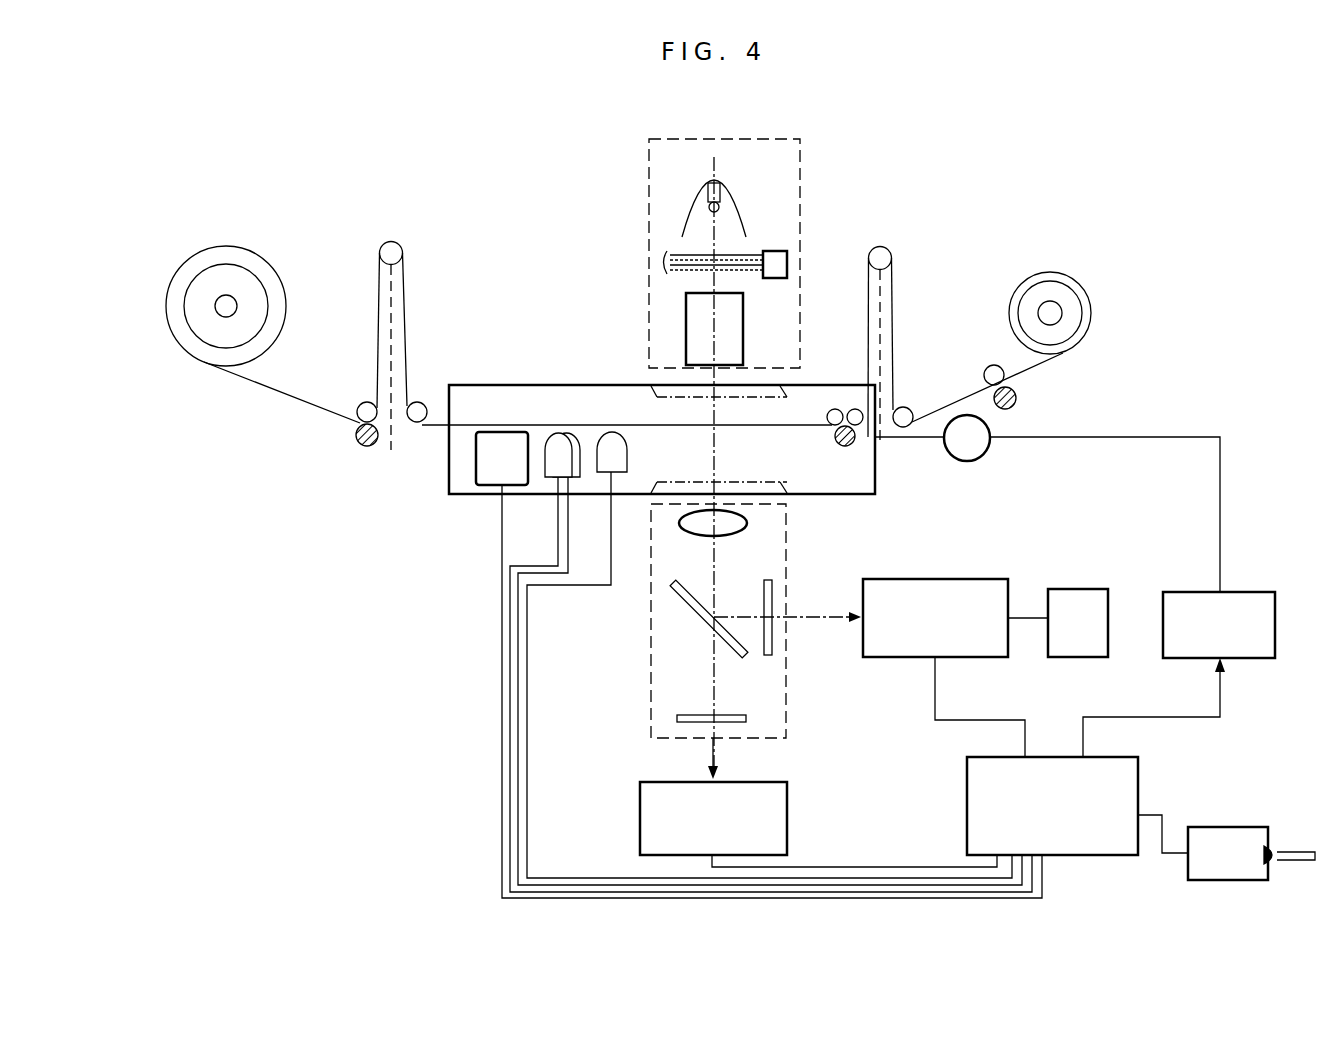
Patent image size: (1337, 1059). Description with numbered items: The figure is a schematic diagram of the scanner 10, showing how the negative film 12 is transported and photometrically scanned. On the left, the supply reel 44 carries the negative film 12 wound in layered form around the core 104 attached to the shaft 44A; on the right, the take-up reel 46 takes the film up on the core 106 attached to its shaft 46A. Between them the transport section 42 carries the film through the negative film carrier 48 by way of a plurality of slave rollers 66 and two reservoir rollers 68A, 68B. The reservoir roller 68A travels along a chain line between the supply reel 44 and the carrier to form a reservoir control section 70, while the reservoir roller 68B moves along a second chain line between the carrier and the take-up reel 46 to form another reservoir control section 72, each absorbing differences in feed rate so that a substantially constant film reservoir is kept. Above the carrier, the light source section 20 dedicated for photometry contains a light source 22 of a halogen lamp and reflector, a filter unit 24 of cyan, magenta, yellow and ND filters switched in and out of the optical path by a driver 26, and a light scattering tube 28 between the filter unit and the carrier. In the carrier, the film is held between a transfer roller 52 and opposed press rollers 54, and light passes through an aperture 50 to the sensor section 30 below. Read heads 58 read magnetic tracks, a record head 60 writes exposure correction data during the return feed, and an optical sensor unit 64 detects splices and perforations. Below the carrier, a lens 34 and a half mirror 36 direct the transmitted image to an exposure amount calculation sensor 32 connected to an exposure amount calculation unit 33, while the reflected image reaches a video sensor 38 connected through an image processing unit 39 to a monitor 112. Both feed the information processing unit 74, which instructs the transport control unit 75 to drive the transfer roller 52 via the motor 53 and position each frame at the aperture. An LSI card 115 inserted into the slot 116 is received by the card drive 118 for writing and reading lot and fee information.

The scanner 10 is at (1044, 196).
The negative film 12 is at (273, 390).
The light source section 20 is at (802, 170).
The light source 22 is at (674, 203).
The filter unit 24 is at (660, 265).
The driver 26 is at (787, 269).
The light scattering tube 28 is at (685, 328).
The sensor section 30 is at (787, 680).
The exposure amount calculation sensor 32 is at (728, 722).
The exposure amount calculation unit 33 is at (788, 802).
The lens 34 is at (723, 540).
The half mirror 36 is at (702, 612).
The video sensor 38 is at (773, 637).
The image processing unit 39 is at (948, 660).
The transport section 42 is at (316, 480).
The supply reel 44 is at (230, 228).
The shaft 44A is at (232, 297).
The take-up reel 46 is at (1111, 244).
The take-up reel hub 46A is at (1060, 315).
The negative film carrier 48 is at (500, 383).
The aperture 50 is at (780, 378).
The transfer roller 52 is at (834, 444).
The motor 53 is at (992, 443).
The press rollers 54 is at (828, 405).
The read heads 58 is at (550, 445).
The record head 60 is at (617, 460).
The optical sensor unit 64 is at (492, 463).
The slave rollers 66 is at (367, 398).
The reservoir roller 68A is at (397, 247).
The reservoir roller 68B is at (882, 250).
The reservoir control section 70 is at (429, 278).
The reservoir control section 72 is at (919, 301).
The information processing unit 74 is at (965, 782).
The transport control unit 75 is at (1230, 660).
The core 104 is at (260, 273).
The core 106 is at (1080, 287).
The monitor 112 is at (1067, 658).
The LSI card 115 is at (1302, 863).
The slot 116 is at (1277, 853).
The card drive 118 is at (1215, 827).